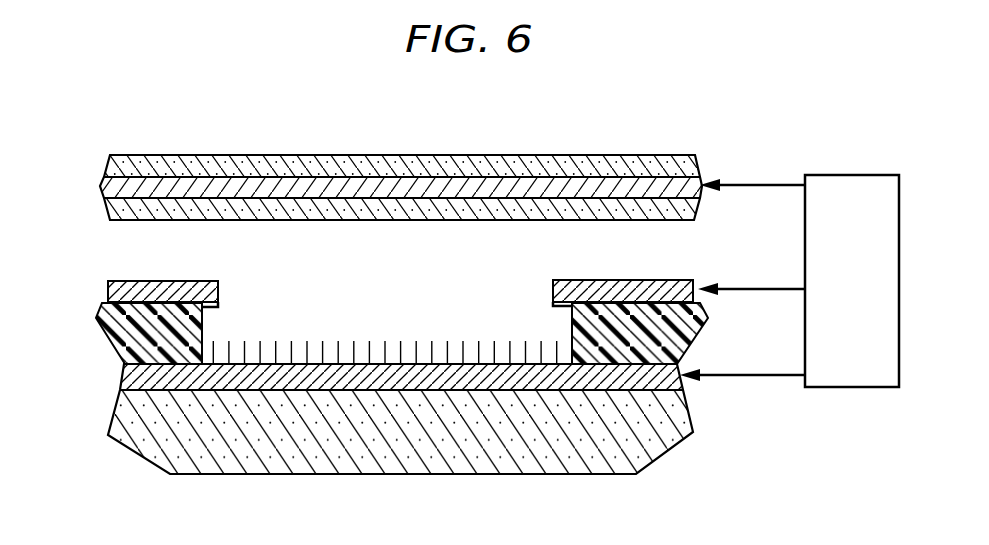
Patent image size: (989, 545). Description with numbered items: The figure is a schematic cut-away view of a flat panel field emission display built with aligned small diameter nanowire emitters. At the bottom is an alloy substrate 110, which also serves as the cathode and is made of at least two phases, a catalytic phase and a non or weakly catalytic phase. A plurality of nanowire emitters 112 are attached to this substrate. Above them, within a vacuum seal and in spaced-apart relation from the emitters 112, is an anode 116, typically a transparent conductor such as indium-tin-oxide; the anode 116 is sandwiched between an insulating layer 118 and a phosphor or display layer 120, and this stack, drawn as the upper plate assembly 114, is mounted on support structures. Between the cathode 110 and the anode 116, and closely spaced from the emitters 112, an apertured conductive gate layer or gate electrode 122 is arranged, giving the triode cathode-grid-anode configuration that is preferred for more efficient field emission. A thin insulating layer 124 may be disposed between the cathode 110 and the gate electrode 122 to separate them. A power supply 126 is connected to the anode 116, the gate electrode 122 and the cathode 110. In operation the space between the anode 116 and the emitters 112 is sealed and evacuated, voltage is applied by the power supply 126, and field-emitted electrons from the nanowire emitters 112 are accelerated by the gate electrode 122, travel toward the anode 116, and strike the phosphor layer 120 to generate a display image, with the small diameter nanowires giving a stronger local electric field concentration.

The alloy substrate 110 is at (130, 370).
The nanowire emitters 112 is at (408, 341).
The faceplate assembly 114 is at (386, 188).
The anode 116 is at (696, 168).
The insulating layer 118 is at (400, 163).
The phosphor layer 120 is at (400, 207).
The gate electrode 122 is at (156, 286).
The thin insulating layer 124 is at (120, 344).
The power supply 126 is at (855, 175).